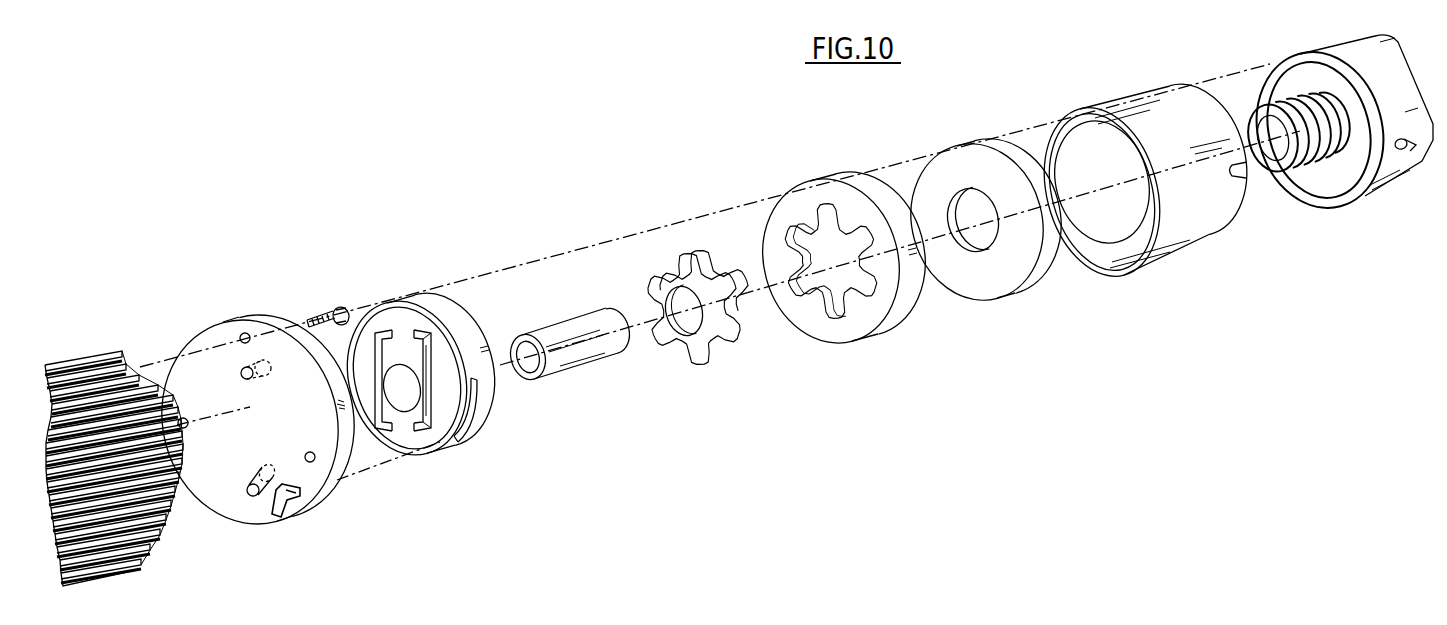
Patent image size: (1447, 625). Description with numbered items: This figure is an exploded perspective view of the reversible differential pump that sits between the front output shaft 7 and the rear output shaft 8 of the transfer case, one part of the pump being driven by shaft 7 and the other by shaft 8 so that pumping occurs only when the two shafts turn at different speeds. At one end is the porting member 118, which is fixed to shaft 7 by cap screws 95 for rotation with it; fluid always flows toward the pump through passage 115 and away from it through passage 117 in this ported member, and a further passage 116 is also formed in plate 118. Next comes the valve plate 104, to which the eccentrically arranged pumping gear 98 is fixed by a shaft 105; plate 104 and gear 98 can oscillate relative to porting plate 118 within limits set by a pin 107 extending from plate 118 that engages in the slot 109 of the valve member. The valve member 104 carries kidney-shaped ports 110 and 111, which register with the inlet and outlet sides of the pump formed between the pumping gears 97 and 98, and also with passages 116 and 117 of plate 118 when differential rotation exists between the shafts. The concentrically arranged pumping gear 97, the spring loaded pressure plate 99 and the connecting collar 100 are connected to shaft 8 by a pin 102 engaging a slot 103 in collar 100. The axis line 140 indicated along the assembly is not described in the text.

The front output shaft 7 is at (123, 447).
The rear output shaft 8 is at (1336, 111).
The cap screws 95 is at (330, 308).
The concentrically arranged pumping gear 97 is at (800, 203).
The eccentrically arranged pumping gear 98 is at (703, 253).
The spring loaded pressure plate 99 is at (962, 148).
The connecting collar 100 is at (1155, 182).
The pin 102 is at (1406, 155).
The slot 103 is at (1247, 168).
The valve plate 104 is at (423, 373).
The shaft 105 is at (583, 357).
The pin 107 is at (290, 503).
The slot 109 is at (465, 422).
The kidney-shaped port 110 is at (378, 333).
The kidney-shaped port 111 is at (425, 428).
The passage 115 is at (162, 538).
The passage 116 is at (250, 490).
The passage 117 is at (245, 380).
The porting member 118 is at (257, 412).
The axis line 140 is at (143, 374).